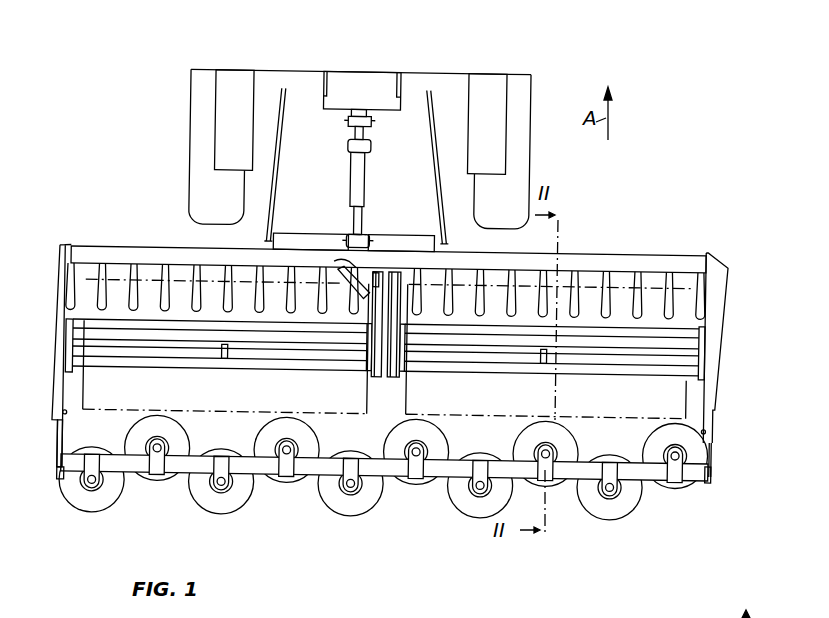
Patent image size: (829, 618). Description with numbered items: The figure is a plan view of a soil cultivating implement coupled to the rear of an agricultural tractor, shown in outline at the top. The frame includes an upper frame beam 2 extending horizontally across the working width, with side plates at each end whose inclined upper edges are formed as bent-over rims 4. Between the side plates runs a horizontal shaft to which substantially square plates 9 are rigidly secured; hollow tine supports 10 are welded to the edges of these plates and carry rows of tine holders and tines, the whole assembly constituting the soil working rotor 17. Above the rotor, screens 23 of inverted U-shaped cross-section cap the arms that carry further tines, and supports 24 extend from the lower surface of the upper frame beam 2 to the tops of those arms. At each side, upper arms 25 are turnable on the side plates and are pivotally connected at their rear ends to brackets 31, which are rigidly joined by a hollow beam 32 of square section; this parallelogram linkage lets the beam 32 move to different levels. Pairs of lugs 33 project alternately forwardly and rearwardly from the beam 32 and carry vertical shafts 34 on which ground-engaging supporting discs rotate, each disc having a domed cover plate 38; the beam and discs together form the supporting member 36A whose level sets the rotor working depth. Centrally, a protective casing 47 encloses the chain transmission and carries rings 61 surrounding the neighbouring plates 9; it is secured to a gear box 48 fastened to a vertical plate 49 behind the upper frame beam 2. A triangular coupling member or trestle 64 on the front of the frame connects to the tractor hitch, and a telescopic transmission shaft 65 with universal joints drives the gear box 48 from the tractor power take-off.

The upper frame beam 2 is at (635, 257).
The bent-over rims 4 is at (55, 338).
The plates 9 is at (222, 358).
The tine supports 10 is at (270, 343).
The soil working rotor 17 is at (116, 411).
The screens 23 is at (105, 288).
The supports 24 is at (599, 275).
The upper arms 25 is at (58, 452).
The brackets 31 is at (62, 480).
The hollow beam 32 is at (452, 467).
The lugs 33 is at (172, 474).
The vertical shafts 34 is at (165, 450).
The supporting member 36A is at (325, 505).
The domed cover plate 38 is at (398, 432).
The protective casing 47 is at (392, 380).
The gear box 48 is at (368, 262).
The vertical plate 49 is at (338, 262).
The rings 61 is at (706, 366).
The coupling member or trestle 64 is at (295, 237).
The telescopic transmission shaft 65 is at (362, 148).